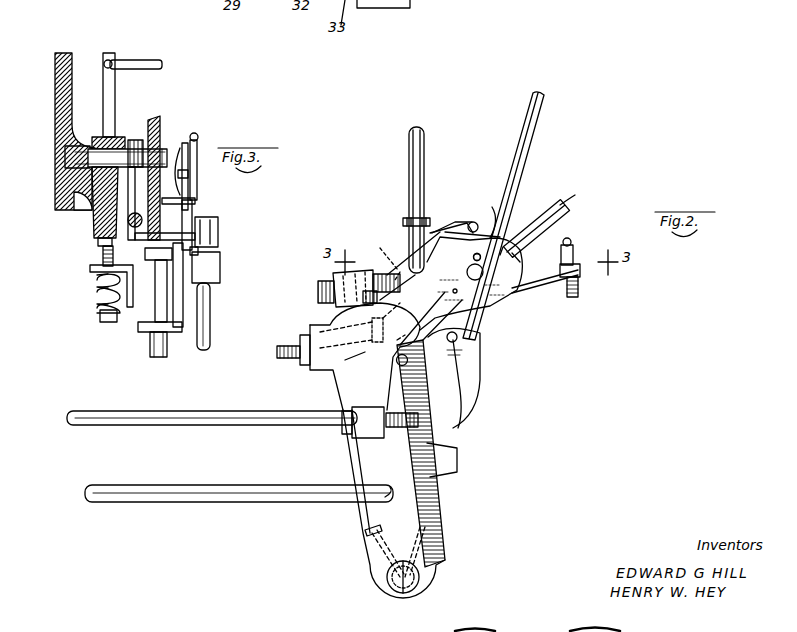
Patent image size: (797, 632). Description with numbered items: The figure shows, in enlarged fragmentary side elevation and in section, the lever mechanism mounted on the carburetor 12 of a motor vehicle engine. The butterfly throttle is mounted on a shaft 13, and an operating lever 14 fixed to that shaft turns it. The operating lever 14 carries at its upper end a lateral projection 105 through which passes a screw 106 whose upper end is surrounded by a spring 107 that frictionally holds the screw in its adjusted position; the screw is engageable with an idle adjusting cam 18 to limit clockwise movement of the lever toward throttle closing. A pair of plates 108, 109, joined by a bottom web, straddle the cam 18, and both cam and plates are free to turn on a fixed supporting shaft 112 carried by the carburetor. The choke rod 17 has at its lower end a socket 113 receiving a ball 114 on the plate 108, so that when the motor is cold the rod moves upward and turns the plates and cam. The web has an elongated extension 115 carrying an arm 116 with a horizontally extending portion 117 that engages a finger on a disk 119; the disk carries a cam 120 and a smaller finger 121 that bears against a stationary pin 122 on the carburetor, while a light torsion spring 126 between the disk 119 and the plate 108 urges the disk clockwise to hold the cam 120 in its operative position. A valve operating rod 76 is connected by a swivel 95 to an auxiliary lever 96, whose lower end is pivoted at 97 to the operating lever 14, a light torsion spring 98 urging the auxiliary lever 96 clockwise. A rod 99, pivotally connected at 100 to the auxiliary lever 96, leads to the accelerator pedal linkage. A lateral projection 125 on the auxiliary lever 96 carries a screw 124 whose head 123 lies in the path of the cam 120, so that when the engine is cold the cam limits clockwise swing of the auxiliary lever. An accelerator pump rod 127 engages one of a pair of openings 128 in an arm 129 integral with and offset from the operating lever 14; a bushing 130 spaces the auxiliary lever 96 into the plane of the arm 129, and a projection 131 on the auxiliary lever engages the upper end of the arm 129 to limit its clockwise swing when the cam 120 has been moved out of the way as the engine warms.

In FIG. 3, the carburetor 12 is at (55, 77).
In FIG. 2, the throttle shaft 13 is at (405, 368).
In FIG. 2, the operating lever 14 is at (437, 515).
In FIG. 3, the operating lever 14 is at (152, 198).
In FIG. 2, the choke rod 17 is at (425, 183).
In FIG. 2, the idle adjusting cam 18 is at (410, 298).
In FIG. 3, the idle adjusting cam 18 is at (100, 125).
In FIG. 2, the valve operating rod 76 is at (225, 423).
In FIG. 3, the valve operating rod 76 is at (212, 332).
In FIG. 2, the swivel 95 is at (368, 405).
In FIG. 3, the swivel 95 is at (222, 268).
In FIG. 2, the auxiliary lever 96 is at (348, 453).
In FIG. 2, the pivot pin 97 is at (413, 570).
In FIG. 2, the torsion spring 98 is at (437, 493).
In FIG. 2, the rod 99 is at (236, 505).
In FIG. 2, the pivotal connection 100 is at (390, 470).
In FIG. 2, the lateral projection 105 is at (370, 270).
In FIG. 3, the lateral projection 105 is at (92, 272).
In FIG. 2, the screw 106 is at (385, 274).
In FIG. 3, the screw 106 is at (103, 258).
In FIG. 2, the spring 107 is at (325, 270).
In FIG. 3, the spring 107 is at (97, 310).
In FIG. 2, the plate 108 is at (455, 230).
In FIG. 3, the plate 108 is at (120, 135).
In FIG. 3, the plate 109 is at (72, 208).
In FIG. 2, the supporting shaft 112 is at (585, 186).
In FIG. 3, the supporting shaft 112 is at (63, 152).
In FIG. 2, the socket 113 is at (410, 232).
In FIG. 2, the ball 114 is at (382, 256).
In FIG. 2, the elongated extension 115 is at (550, 286).
In FIG. 2, the arm 116 is at (573, 250).
In FIG. 3, the arm 116 is at (112, 48).
In FIG. 2, the horizontally extending portion 117 is at (575, 222).
In FIG. 3, the horizontally extending portion 117 is at (152, 59).
In FIG. 2, the disk 119 is at (495, 205).
In FIG. 3, the disk 119 is at (182, 140).
In FIG. 2, the cam 120 is at (470, 274).
In FIG. 3, the cam 120 is at (218, 198).
In FIG. 2, the smaller finger 121 is at (470, 252).
In FIG. 2, the stationary pin 122 is at (472, 220).
In FIG. 2, the head 123 is at (361, 353).
In FIG. 3, the head 123 is at (200, 250).
In FIG. 2, the screw 124 is at (288, 345).
In FIG. 3, the screw 124 is at (152, 307).
In FIG. 2, the lateral projection 125 is at (304, 318).
In FIG. 3, the lateral projection 125 is at (178, 338).
In FIG. 2, the torsion spring 126 is at (505, 250).
In FIG. 3, the torsion spring 126 is at (140, 147).
In FIG. 2, the accelerator pump rod 127 is at (548, 122).
In FIG. 3, the accelerator pump rod 127 is at (198, 133).
In FIG. 2, the openings 128 is at (466, 335).
In FIG. 2, the arm 129 is at (458, 400).
In FIG. 3, the arm 129 is at (195, 135).
In FIG. 3, the bushing 130 is at (205, 182).
In FIG. 2, the projection 131 is at (370, 318).